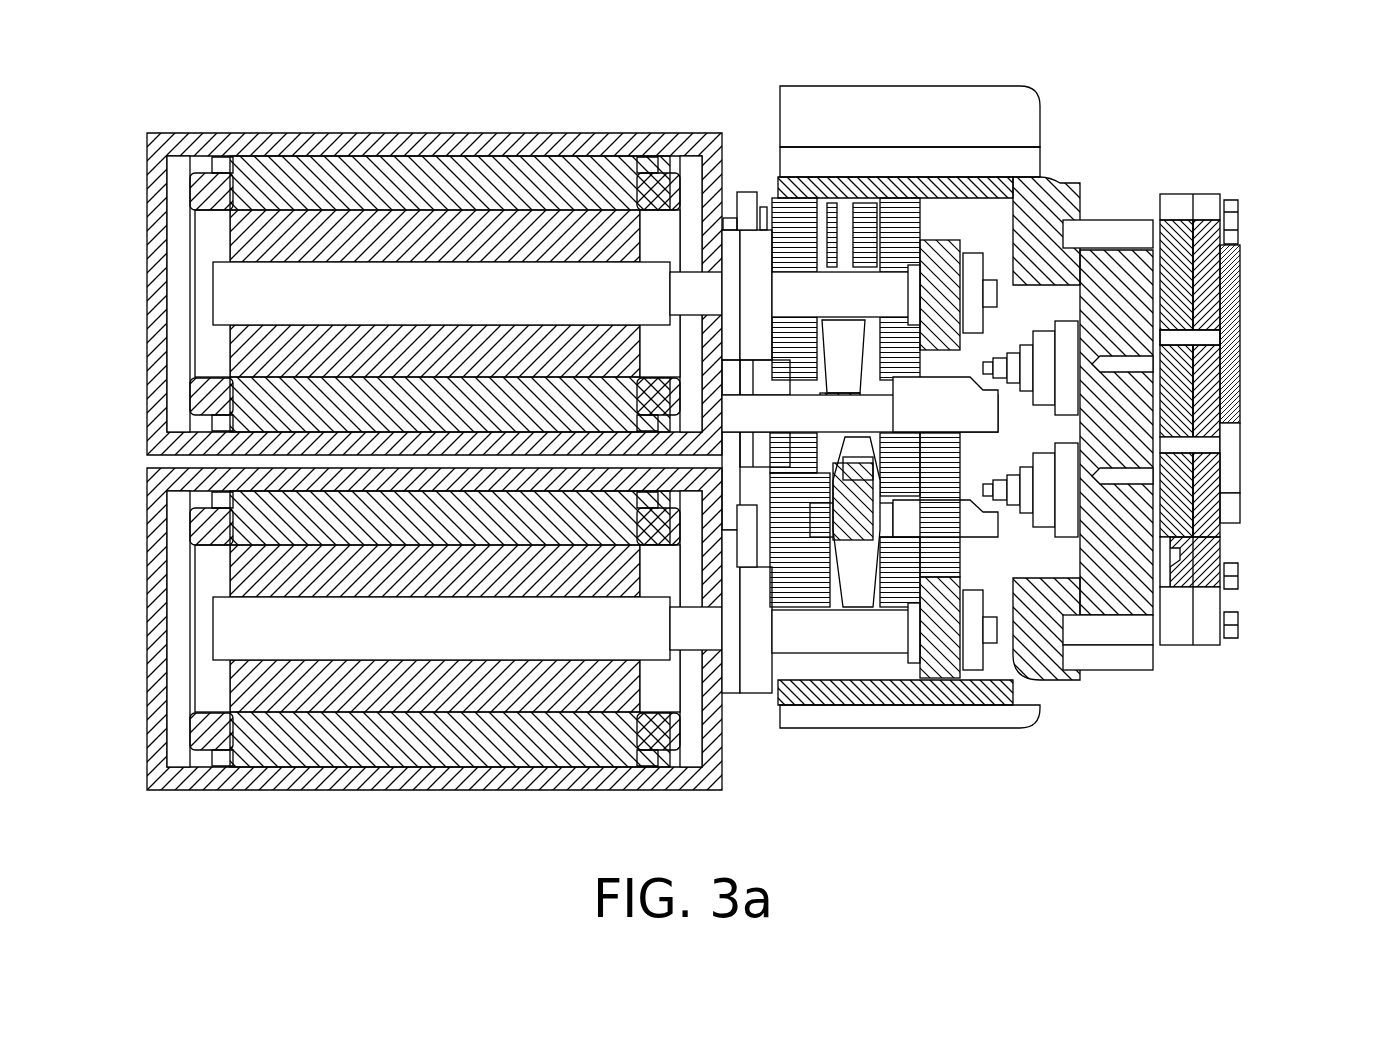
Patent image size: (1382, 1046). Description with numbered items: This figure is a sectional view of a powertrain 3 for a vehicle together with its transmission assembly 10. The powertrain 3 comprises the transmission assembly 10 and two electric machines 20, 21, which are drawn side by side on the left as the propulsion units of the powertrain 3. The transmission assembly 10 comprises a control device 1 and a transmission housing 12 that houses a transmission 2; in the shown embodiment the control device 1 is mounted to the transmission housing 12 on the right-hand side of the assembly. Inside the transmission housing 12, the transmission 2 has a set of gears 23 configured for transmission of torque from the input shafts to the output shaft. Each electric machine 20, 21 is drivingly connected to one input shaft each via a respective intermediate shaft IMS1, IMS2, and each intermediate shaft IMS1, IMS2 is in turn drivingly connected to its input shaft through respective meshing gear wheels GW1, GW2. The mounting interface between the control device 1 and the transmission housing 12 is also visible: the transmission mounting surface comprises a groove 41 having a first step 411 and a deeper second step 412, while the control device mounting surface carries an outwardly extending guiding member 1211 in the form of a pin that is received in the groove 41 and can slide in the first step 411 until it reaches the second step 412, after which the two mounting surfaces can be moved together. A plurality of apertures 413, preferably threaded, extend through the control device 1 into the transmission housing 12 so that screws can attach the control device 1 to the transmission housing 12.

The control device 1 is at (1208, 200).
The transmission 2 is at (943, 400).
The powertrain 3 is at (434, 449).
The transmission assembly 10 is at (1257, 377).
The transmission housing 12 is at (978, 117).
The electric machine 20 is at (432, 790).
The electric machine 21 is at (432, 133).
The set of gears 23 is at (893, 542).
The groove 41 is at (1257, 520).
The first step 411 is at (1172, 568).
The second step 412 is at (1185, 538).
The apertures 413 is at (1178, 340).
The outwardly extending guiding member 1211 is at (1175, 640).
The gear wheel GW1 is at (968, 648).
The gear wheel GW2 is at (955, 288).
The intermediate shaft IMS1 is at (895, 662).
The intermediate shaft IMS2 is at (887, 262).